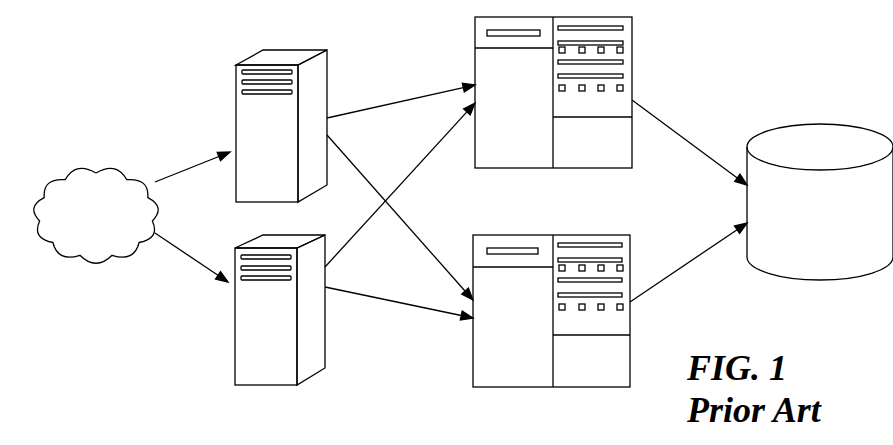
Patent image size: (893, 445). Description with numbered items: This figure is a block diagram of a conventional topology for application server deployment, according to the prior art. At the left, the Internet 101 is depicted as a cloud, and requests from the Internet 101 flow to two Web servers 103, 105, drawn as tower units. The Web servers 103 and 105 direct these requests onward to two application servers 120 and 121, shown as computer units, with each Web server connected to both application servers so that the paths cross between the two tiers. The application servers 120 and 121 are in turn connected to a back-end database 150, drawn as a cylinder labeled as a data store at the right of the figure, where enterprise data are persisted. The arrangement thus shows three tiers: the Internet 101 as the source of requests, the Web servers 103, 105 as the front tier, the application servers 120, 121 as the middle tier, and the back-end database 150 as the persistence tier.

The Internet 101 is at (92, 172).
The Web server 103 is at (236, 120).
The Web server 105 is at (235, 338).
The application server 120 is at (475, 55).
The application server 121 is at (473, 257).
The back-end database 150 is at (820, 202).